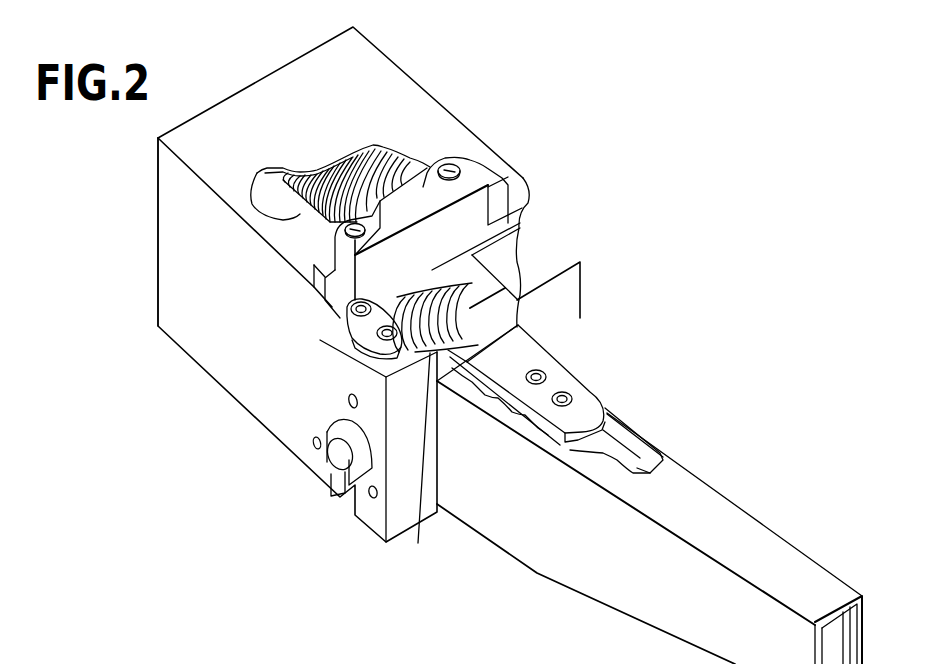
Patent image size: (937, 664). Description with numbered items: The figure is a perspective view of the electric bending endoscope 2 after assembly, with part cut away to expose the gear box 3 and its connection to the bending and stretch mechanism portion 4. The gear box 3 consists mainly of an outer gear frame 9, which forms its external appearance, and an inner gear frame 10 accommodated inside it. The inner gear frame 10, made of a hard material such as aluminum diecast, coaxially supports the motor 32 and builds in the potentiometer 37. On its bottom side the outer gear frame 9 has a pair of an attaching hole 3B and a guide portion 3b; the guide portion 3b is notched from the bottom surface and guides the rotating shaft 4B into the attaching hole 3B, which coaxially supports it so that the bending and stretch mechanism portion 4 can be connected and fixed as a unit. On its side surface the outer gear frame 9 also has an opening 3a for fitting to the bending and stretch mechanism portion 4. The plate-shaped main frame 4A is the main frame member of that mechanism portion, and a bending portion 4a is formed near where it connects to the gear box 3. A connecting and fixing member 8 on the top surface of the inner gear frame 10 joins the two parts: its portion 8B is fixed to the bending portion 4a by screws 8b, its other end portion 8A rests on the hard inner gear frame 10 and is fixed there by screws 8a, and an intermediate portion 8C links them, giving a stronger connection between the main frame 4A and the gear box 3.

The sensor unit 2 is at (560, 82).
The gear box 3 is at (407, 118).
The opening 3a is at (348, 402).
The attaching hole 3B is at (333, 428).
The guide portion 3b is at (340, 496).
The bending and stretch mechanism portion 4 is at (710, 502).
The main frame 4A is at (657, 437).
The bending portion 4a is at (548, 425).
The rotating shaft 4B is at (333, 462).
The connecting and fixing member 8 is at (473, 216).
The upper bracket plate 8A is at (470, 180).
The screw 8a is at (450, 163).
The lower bracket plate 8B is at (525, 352).
The screw 8b is at (538, 373).
The connecting block 8C is at (483, 283).
The outer gear frame 9 is at (278, 247).
The inner gear frame 10 is at (270, 203).
The motor 32 is at (358, 150).
The potentiometer 37 is at (422, 460).